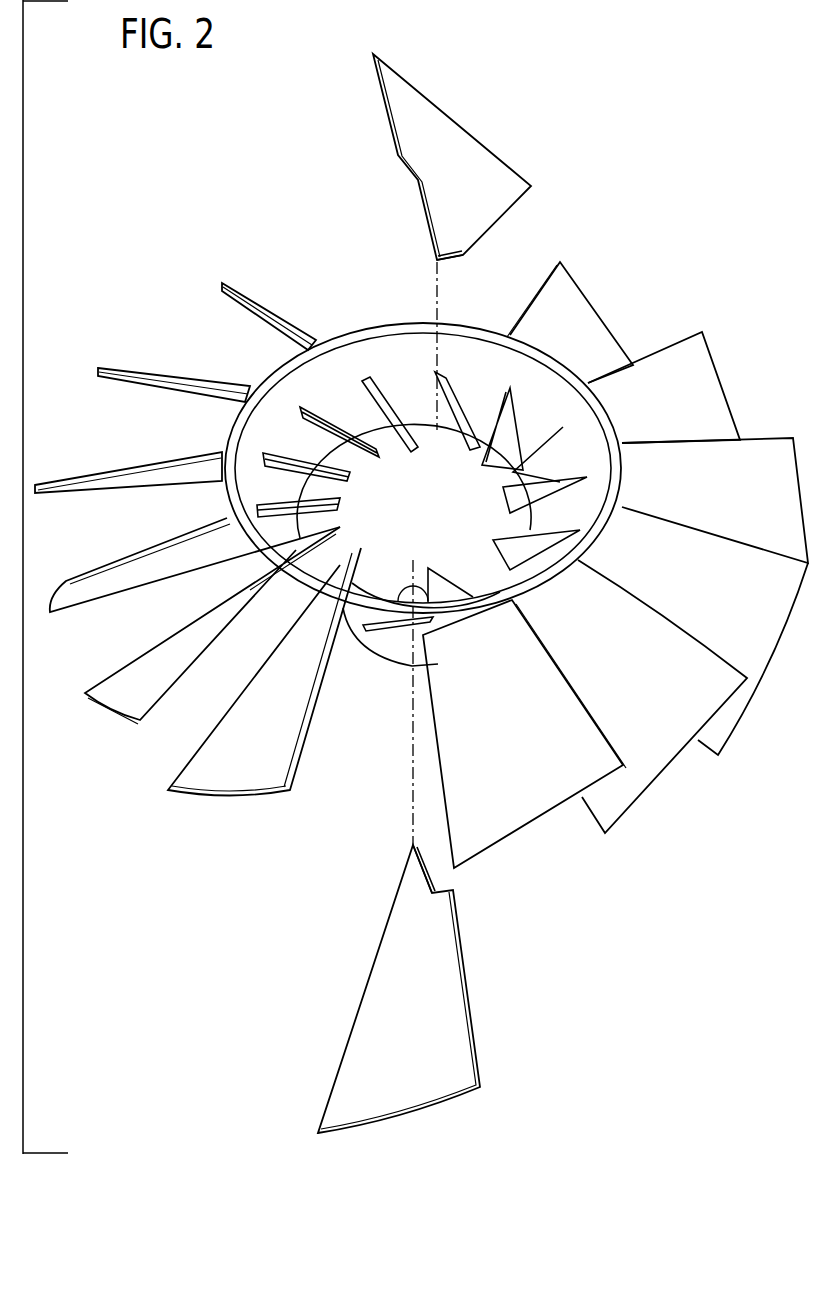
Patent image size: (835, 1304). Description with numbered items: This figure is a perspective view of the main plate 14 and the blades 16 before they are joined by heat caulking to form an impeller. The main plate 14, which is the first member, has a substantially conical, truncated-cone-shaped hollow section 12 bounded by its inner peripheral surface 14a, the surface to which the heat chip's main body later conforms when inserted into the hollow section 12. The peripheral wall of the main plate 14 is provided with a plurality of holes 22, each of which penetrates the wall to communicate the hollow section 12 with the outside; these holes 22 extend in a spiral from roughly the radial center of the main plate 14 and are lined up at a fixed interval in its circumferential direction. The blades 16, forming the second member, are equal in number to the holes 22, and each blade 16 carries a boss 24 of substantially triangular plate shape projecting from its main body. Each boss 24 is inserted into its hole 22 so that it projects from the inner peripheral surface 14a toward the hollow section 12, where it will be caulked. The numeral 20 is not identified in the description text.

The hollow section 12 is at (340, 380).
The main plate 14 is at (478, 330).
The inner peripheral surface 14a is at (387, 347).
The blade 16 is at (478, 150).
The hub 20 is at (412, 568).
The hole 22 is at (450, 440).
The boss 24 is at (447, 249).